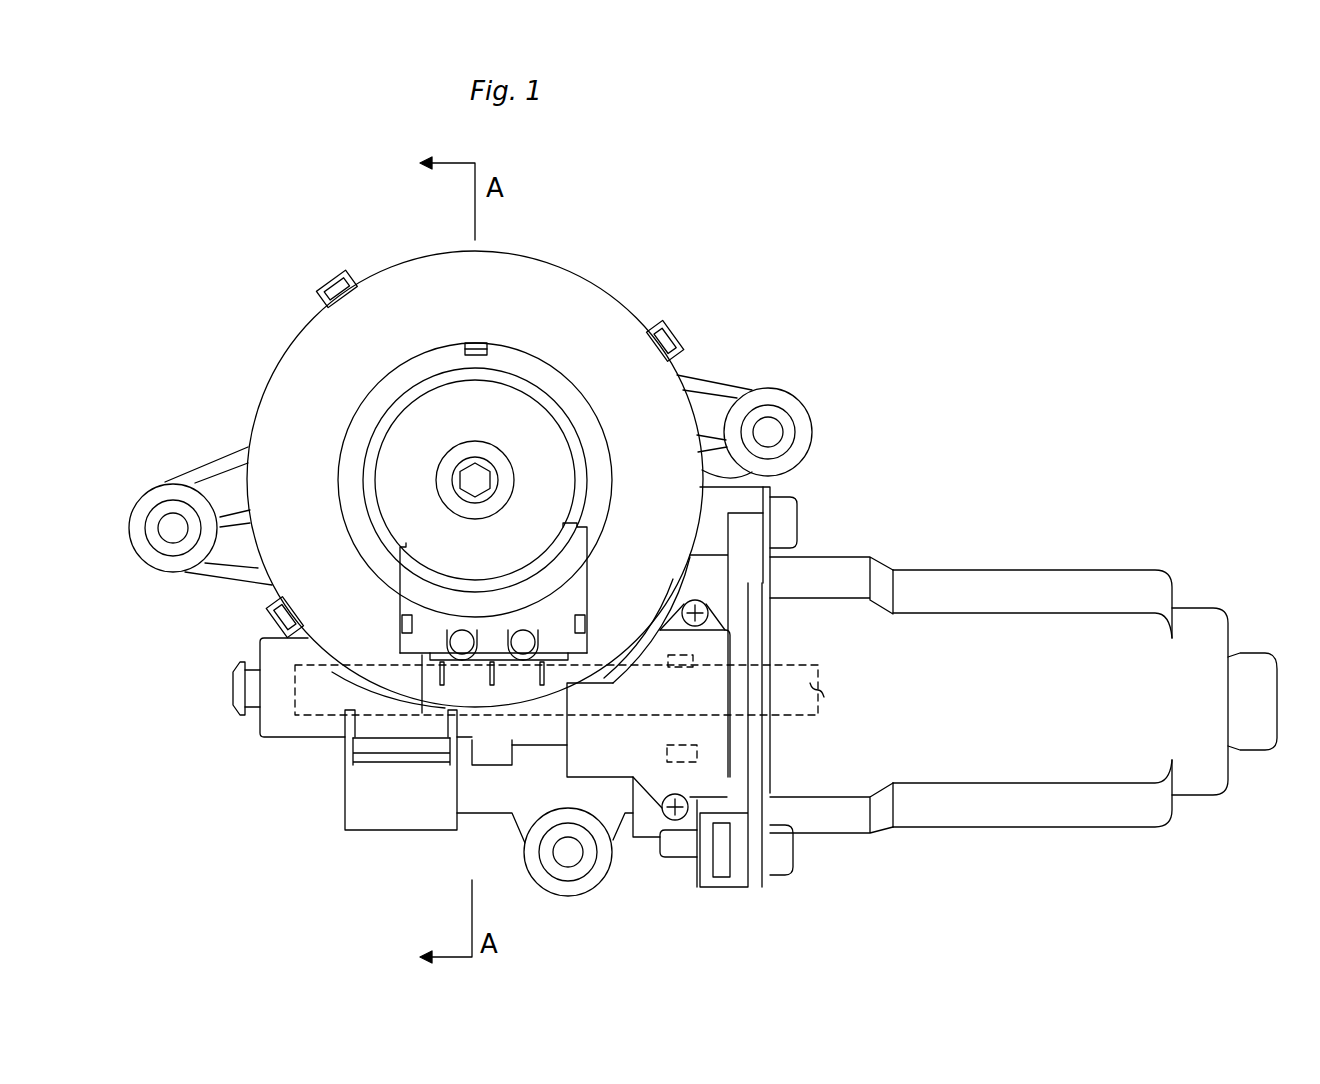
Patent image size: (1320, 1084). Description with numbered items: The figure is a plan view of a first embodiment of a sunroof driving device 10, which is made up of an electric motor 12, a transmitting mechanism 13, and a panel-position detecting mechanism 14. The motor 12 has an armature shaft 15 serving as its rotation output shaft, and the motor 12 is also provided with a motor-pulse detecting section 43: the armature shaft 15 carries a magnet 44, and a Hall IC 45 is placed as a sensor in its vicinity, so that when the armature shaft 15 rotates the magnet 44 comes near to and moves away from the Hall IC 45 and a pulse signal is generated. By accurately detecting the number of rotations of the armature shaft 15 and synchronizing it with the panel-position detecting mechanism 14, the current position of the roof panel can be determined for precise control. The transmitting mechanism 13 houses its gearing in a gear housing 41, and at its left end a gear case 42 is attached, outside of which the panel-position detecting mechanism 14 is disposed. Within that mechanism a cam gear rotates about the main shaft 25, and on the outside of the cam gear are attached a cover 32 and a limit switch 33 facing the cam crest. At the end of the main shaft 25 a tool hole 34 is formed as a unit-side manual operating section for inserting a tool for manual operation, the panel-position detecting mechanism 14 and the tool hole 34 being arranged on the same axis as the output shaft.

The driving device 10 is at (614, 288).
The electric motor 12 is at (1005, 627).
The transmitting mechanism 13 is at (277, 433).
The panel-position detecting mechanism 14 is at (437, 418).
The armature shaft 15 is at (590, 700).
The main shaft 25 is at (453, 485).
The cover 32 is at (583, 413).
The limit switch 33 is at (572, 593).
The tool hole 34 is at (487, 478).
The gear housing 41 is at (728, 383).
The gear case 42 is at (525, 277).
The motor-pulse detecting section 43 is at (672, 772).
The magnet 44 is at (700, 652).
The Hall IC 45 is at (697, 750).